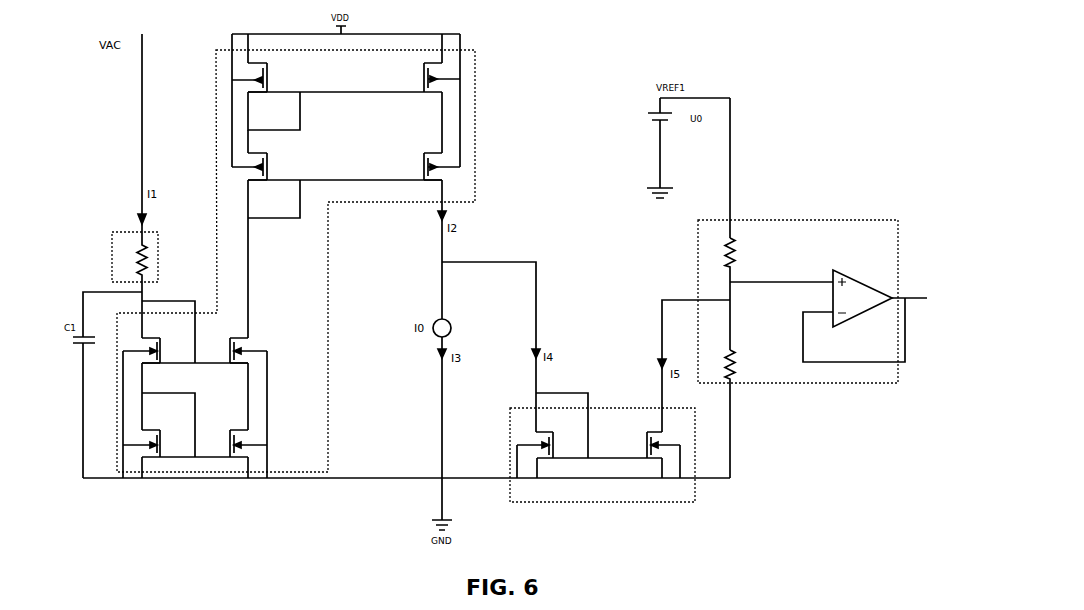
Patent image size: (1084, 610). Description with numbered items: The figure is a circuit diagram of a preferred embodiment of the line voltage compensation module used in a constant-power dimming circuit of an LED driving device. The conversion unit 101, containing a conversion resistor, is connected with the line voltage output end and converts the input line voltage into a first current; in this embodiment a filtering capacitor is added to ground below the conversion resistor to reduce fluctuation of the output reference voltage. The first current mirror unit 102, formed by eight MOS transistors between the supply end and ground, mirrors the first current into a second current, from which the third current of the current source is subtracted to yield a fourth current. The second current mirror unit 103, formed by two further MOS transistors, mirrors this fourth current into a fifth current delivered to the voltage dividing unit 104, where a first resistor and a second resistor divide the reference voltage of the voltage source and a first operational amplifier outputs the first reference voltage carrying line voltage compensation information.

The conversion unit 101 is at (130, 232).
The first current mirror unit 102 is at (476, 150).
The second current mirror unit 103 is at (653, 407).
The voltage dividing unit 104 is at (800, 217).